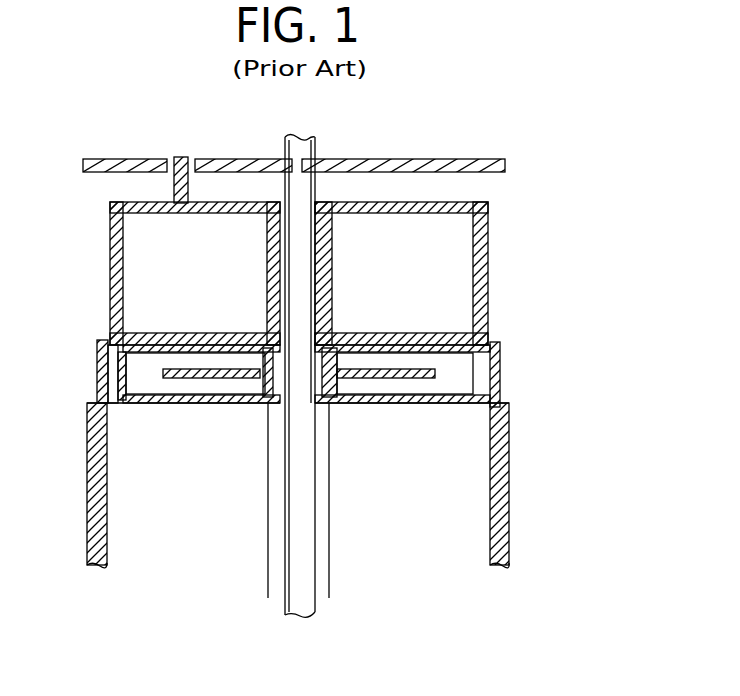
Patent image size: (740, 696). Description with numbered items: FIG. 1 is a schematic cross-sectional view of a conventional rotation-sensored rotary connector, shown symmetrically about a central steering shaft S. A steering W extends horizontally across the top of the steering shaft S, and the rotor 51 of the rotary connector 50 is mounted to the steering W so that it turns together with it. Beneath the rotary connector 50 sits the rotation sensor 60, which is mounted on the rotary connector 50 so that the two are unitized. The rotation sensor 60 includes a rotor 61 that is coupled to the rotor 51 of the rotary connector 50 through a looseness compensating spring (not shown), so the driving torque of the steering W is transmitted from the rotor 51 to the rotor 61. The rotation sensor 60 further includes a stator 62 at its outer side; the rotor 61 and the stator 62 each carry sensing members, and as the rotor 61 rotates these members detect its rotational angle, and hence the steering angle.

The rotary connector 50 is at (339, 251).
The rotor 51 is at (112, 203).
The rotation sensor 60 is at (513, 369).
The rotor 61 is at (163, 372).
The stator 62 is at (500, 346).
The steering shaft S is at (315, 137).
The steering W is at (458, 159).